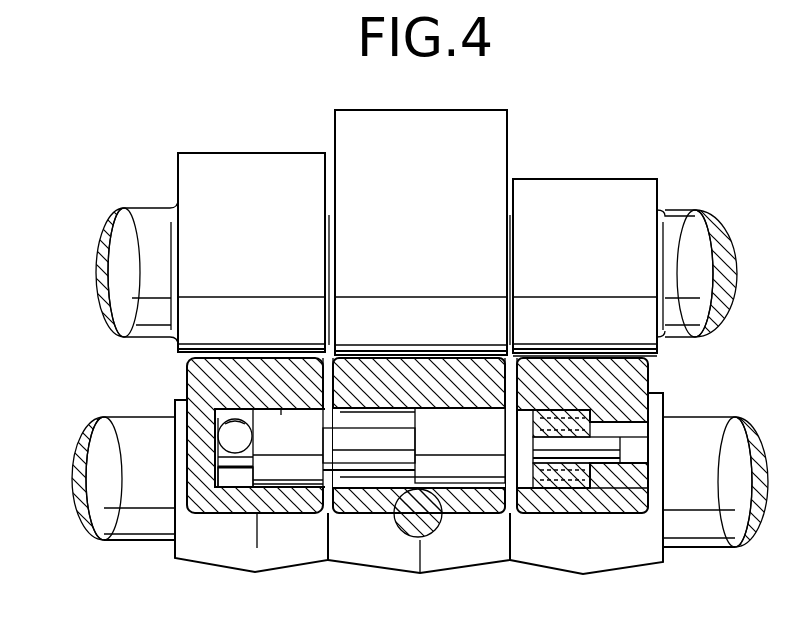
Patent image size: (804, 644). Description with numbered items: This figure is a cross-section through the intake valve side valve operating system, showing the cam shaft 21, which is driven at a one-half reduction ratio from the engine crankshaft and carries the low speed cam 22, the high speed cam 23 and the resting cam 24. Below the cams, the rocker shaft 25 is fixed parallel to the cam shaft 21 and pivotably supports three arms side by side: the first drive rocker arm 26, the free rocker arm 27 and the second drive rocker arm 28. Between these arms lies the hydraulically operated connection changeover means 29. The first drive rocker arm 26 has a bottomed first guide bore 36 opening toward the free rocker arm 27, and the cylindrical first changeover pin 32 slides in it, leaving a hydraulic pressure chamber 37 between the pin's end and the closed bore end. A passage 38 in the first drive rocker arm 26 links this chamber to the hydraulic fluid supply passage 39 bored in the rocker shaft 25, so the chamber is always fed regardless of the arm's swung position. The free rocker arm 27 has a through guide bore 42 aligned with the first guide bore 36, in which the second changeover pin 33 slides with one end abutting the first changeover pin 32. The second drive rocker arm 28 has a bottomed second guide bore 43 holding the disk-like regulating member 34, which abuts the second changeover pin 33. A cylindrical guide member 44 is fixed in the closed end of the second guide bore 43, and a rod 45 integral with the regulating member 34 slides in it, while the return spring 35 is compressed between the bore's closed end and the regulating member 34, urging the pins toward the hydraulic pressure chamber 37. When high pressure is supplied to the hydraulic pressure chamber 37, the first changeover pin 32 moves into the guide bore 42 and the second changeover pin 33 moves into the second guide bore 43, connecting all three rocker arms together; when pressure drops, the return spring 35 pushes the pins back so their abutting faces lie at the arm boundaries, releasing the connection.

The cam shaft 21 is at (124, 214).
The low speed cam 22 is at (268, 254).
The high speed cam 23 is at (430, 254).
The resting cam 24 is at (597, 254).
The rocker shaft 25 is at (132, 530).
The first drive rocker arm 26 is at (212, 556).
The free rocker arm 27 is at (419, 487).
The second drive rocker arm 28 is at (577, 562).
The hydraulically operated connection changeover means 29 is at (463, 490).
The first changeover pin 32 is at (301, 488).
The second changeover pin 33 is at (475, 445).
The regulating member 34 is at (529, 372).
The return spring 35 is at (582, 477).
The first guide bore 36 is at (282, 414).
The hydraulic pressure chamber 37 is at (214, 478).
The passage 38 is at (238, 426).
The hydraulic fluid supply passage 39 is at (87, 528).
The guide bore 42 is at (372, 482).
The second guide bore 43 is at (563, 411).
The guide member 44 is at (626, 490).
The rod 45 is at (612, 441).